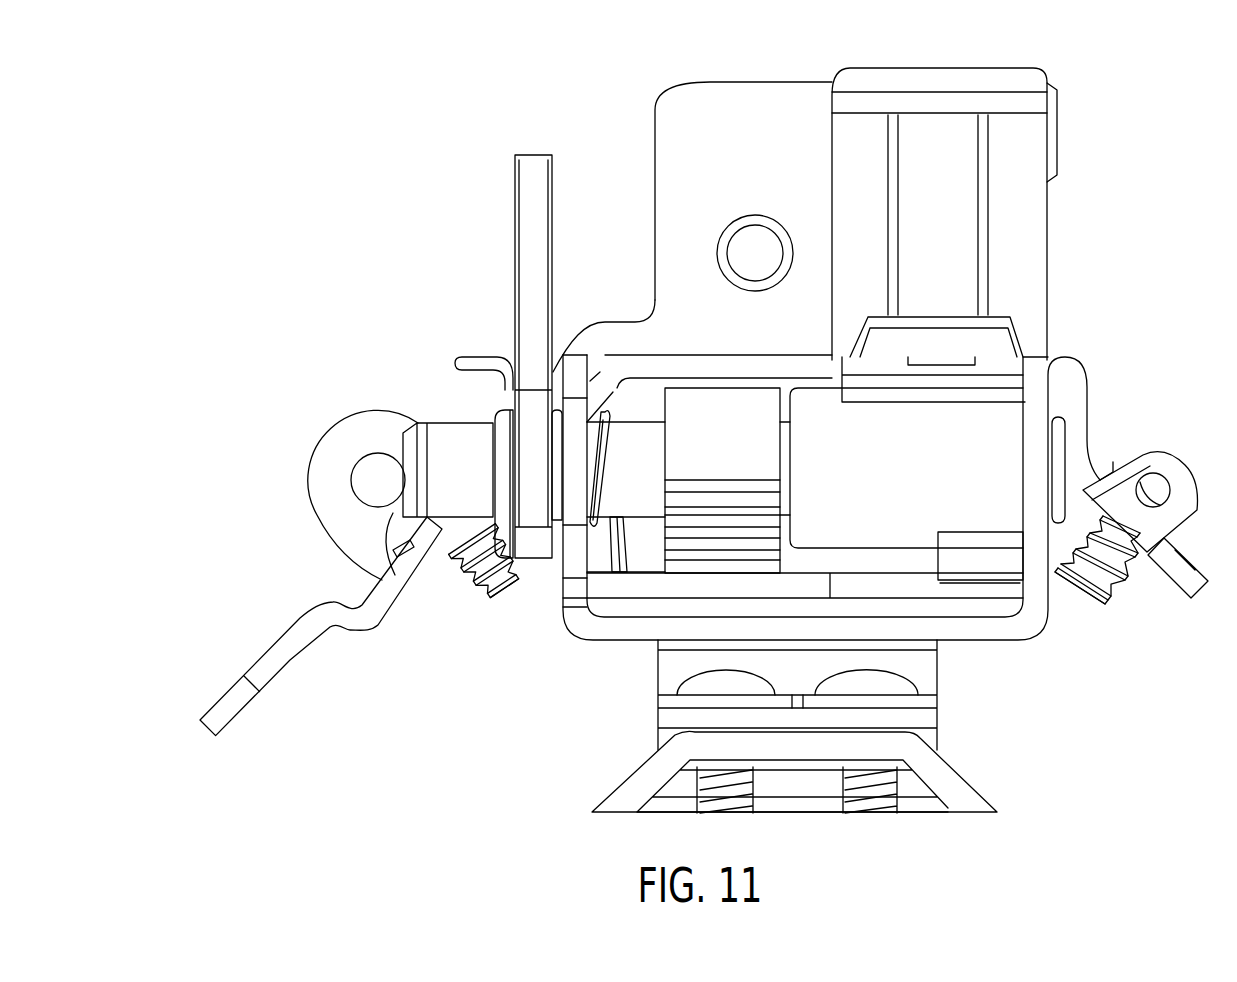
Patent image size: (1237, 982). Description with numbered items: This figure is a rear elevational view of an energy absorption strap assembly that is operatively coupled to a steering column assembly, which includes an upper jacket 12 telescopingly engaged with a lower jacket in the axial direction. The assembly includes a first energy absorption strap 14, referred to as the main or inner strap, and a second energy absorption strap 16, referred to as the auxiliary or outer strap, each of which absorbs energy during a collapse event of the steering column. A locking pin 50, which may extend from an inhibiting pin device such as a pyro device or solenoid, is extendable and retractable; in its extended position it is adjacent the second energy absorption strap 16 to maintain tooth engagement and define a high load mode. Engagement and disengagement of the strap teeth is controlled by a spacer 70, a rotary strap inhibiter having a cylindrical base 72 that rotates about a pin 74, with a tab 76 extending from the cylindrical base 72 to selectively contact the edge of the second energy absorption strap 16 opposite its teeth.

The upper jacket 12 is at (960, 790).
The first energy absorption strap 14 is at (633, 587).
The second energy absorption strap 16 is at (898, 592).
The locking pin 50 is at (931, 148).
The spacer 70 is at (1028, 457).
The cylindrical base 72 is at (967, 422).
The pin 74 is at (643, 448).
The tab 76 is at (1002, 567).